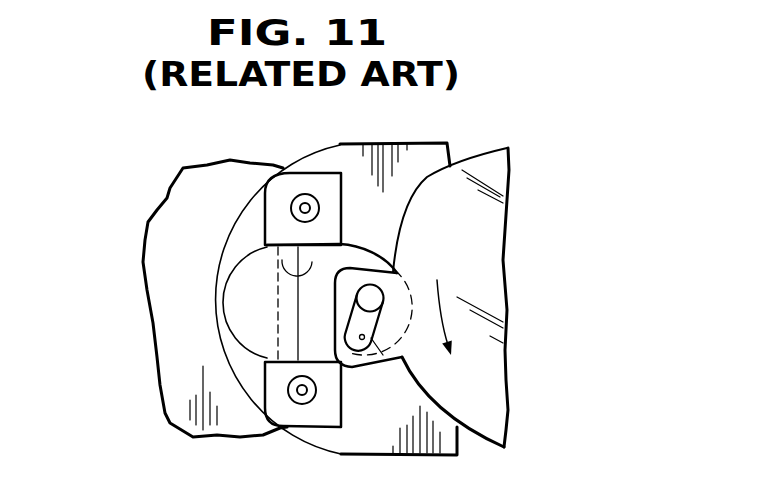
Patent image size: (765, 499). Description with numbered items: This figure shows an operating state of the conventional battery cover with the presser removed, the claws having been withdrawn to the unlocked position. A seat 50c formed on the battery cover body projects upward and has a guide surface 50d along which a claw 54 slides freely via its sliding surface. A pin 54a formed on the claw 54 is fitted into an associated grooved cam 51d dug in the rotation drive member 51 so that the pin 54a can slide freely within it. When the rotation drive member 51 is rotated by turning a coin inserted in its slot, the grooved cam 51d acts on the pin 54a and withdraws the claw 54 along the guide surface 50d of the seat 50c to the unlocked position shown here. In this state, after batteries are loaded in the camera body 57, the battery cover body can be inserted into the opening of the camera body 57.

The seat 50c is at (275, 213).
The guide surface 50d is at (300, 267).
The rotation drive member 51 is at (487, 230).
The grooved cam 51d is at (440, 393).
The claw 54 is at (250, 293).
The pin 54a is at (377, 295).
The camera body 57 is at (180, 353).